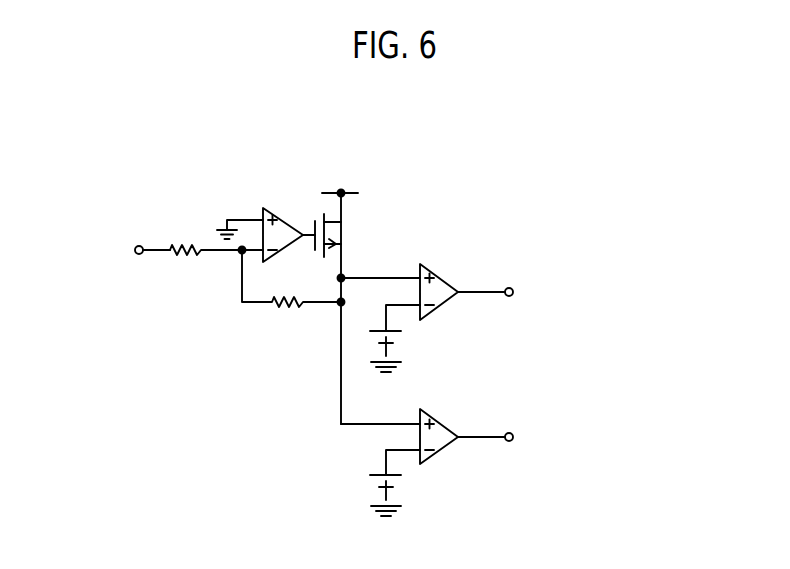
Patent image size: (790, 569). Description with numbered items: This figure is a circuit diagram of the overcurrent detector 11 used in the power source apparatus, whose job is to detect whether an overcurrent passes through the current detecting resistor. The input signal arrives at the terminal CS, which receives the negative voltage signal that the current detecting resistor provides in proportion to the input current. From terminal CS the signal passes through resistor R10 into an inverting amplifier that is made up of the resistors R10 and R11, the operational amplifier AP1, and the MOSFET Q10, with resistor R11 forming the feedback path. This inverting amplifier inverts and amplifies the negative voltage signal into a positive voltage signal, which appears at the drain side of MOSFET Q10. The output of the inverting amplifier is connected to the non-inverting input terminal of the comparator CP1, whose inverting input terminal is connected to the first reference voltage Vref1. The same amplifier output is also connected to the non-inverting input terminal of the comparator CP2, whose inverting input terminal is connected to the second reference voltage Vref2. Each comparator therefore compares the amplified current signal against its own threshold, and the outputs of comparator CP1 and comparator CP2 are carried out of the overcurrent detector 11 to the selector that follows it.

The overcurrent detector 11 is at (506, 195).
The current sense input terminal CS is at (148, 236).
The resistor R10 is at (188, 264).
The resistor R11 is at (291, 294).
The operational amplifier AP1 is at (266, 221).
The MOSFET Q10 is at (348, 234).
The comparator CP2 is at (539, 280).
The comparator CP1 is at (539, 425).
The second reference voltage Vref2 is at (412, 338).
The first reference voltage Vref1 is at (367, 483).